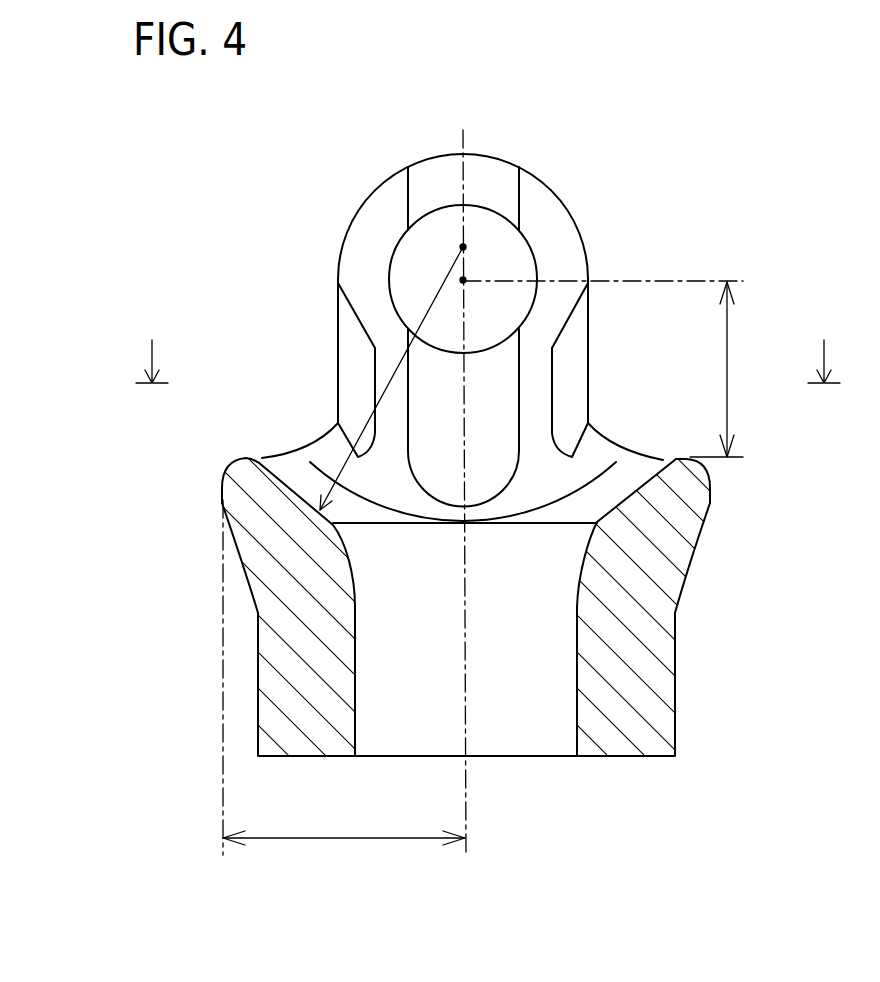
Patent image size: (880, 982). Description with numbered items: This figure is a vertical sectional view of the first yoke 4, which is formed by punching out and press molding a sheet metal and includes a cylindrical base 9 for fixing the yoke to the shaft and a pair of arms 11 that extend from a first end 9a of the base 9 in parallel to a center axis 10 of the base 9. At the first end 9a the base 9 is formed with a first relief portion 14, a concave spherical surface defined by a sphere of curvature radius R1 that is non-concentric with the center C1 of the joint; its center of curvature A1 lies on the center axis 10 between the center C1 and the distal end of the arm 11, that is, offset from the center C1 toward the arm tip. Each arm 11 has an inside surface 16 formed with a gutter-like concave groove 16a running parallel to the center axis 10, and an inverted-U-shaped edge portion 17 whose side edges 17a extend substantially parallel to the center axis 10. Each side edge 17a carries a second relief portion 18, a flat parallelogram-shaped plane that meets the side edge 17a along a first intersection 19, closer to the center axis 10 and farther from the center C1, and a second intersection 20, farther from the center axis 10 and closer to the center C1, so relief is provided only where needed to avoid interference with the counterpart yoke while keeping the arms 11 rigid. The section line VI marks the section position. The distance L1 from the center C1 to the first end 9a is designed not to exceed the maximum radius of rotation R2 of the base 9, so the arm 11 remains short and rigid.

The first yoke 4 is at (488, 125).
The arm 11 is at (453, 155).
The inside surface 16 is at (383, 205).
The concave groove 16a is at (432, 180).
The edge portion 17 is at (372, 207).
The side edge 17a is at (338, 295).
The second intersection 20 is at (340, 332).
The second relief portion 18 is at (362, 365).
The first intersection 19 is at (373, 393).
The first relief portion 14 is at (285, 470).
The cylindrical base 9 is at (678, 690).
The first end 9a is at (690, 527).
The center axis 10 is at (467, 713).
The center of curvature A1 is at (463, 247).
The center of the joint C1 is at (463, 280).
The curvature radius R1 is at (332, 422).
The maximum radius of rotation R2 is at (344, 825).
The distance L1 is at (730, 369).
The section line VI- VI is at (488, 346).